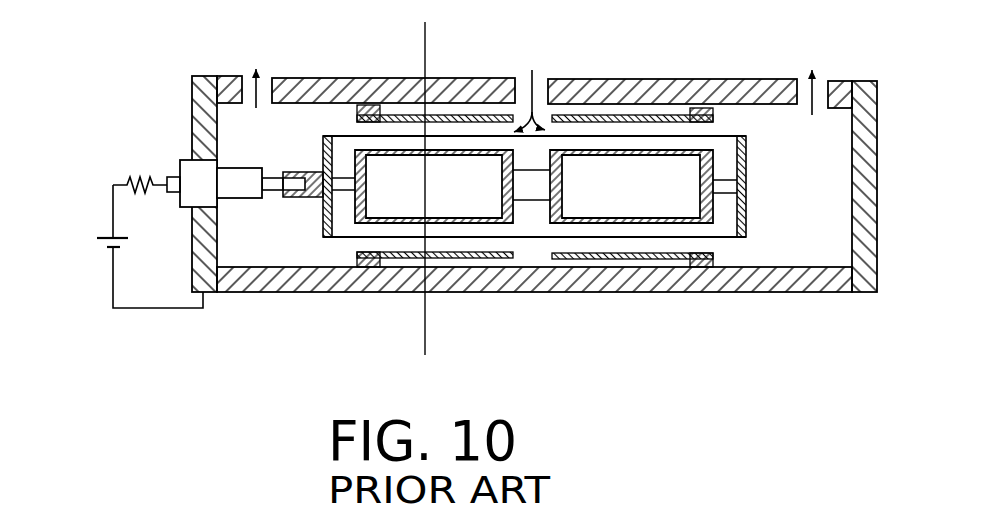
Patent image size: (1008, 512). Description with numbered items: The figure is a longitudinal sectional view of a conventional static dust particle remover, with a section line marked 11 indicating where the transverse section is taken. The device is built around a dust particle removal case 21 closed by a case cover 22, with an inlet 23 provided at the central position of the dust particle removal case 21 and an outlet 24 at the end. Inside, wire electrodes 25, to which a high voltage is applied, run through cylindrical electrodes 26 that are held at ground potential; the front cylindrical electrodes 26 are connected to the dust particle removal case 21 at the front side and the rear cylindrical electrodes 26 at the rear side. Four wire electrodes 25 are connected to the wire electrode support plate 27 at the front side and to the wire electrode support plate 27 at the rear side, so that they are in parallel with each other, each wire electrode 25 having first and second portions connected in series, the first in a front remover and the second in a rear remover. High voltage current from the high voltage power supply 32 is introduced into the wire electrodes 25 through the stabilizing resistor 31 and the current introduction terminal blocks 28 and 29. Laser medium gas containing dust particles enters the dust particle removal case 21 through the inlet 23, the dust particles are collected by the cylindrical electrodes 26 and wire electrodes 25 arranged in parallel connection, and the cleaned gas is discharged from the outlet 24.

The section line XI-XI 11 is at (427, 32).
The dust particle removal case 21 is at (740, 294).
The case cover 22 is at (857, 294).
The inlet 23 is at (540, 80).
The outlet 24 is at (800, 80).
The wire electrodes 25 is at (343, 135).
The cylindrical electrodes 26 is at (398, 117).
The wire electrode support plates 27 is at (746, 150).
The current introduction terminal block 28 is at (310, 199).
The current introduction terminal block 29 is at (238, 200).
The stabilizing resistor 31 is at (142, 180).
The high voltage power supply 32 is at (97, 240).